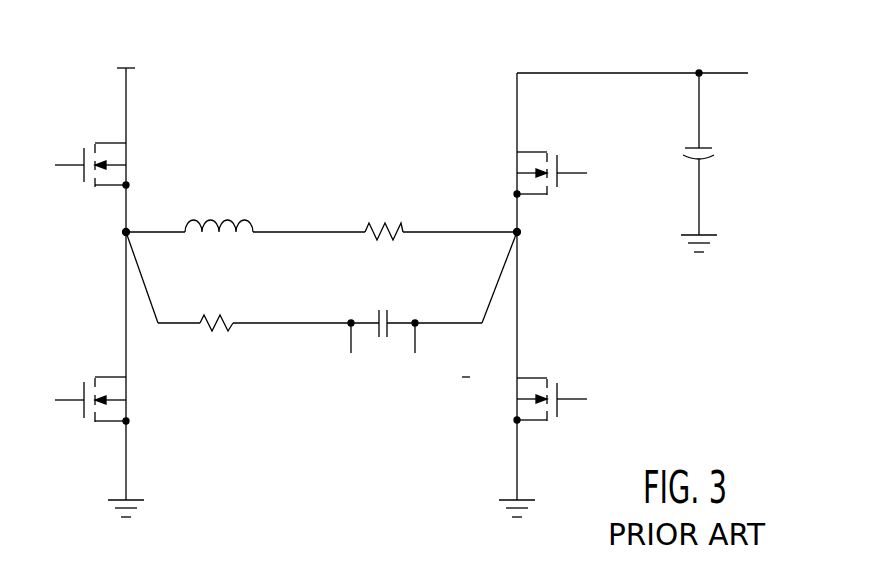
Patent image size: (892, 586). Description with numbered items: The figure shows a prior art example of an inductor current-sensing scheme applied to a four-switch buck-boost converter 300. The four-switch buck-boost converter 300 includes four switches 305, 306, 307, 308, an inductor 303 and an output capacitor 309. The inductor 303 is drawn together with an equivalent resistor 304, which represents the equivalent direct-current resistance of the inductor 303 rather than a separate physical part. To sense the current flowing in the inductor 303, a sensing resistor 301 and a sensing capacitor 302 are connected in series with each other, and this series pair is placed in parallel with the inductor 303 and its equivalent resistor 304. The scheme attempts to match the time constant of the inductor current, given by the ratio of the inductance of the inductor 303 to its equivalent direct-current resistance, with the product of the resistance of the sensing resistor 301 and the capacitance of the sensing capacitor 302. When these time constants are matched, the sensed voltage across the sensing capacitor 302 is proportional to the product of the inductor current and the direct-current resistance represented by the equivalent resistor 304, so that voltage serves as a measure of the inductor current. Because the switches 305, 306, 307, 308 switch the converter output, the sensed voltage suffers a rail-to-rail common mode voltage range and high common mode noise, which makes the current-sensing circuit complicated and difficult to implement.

The four-switch buck-boost converter 300 is at (363, 73).
The sensing resistor 301 is at (217, 335).
The sensing capacitor 302 is at (395, 310).
The inductor 303 is at (237, 213).
The DCR resistor 304 is at (398, 225).
The switch 305 is at (88, 133).
The switch 306 is at (83, 432).
The switch 307 is at (555, 372).
The switch 308 is at (556, 142).
The output capacitor 309 is at (718, 155).